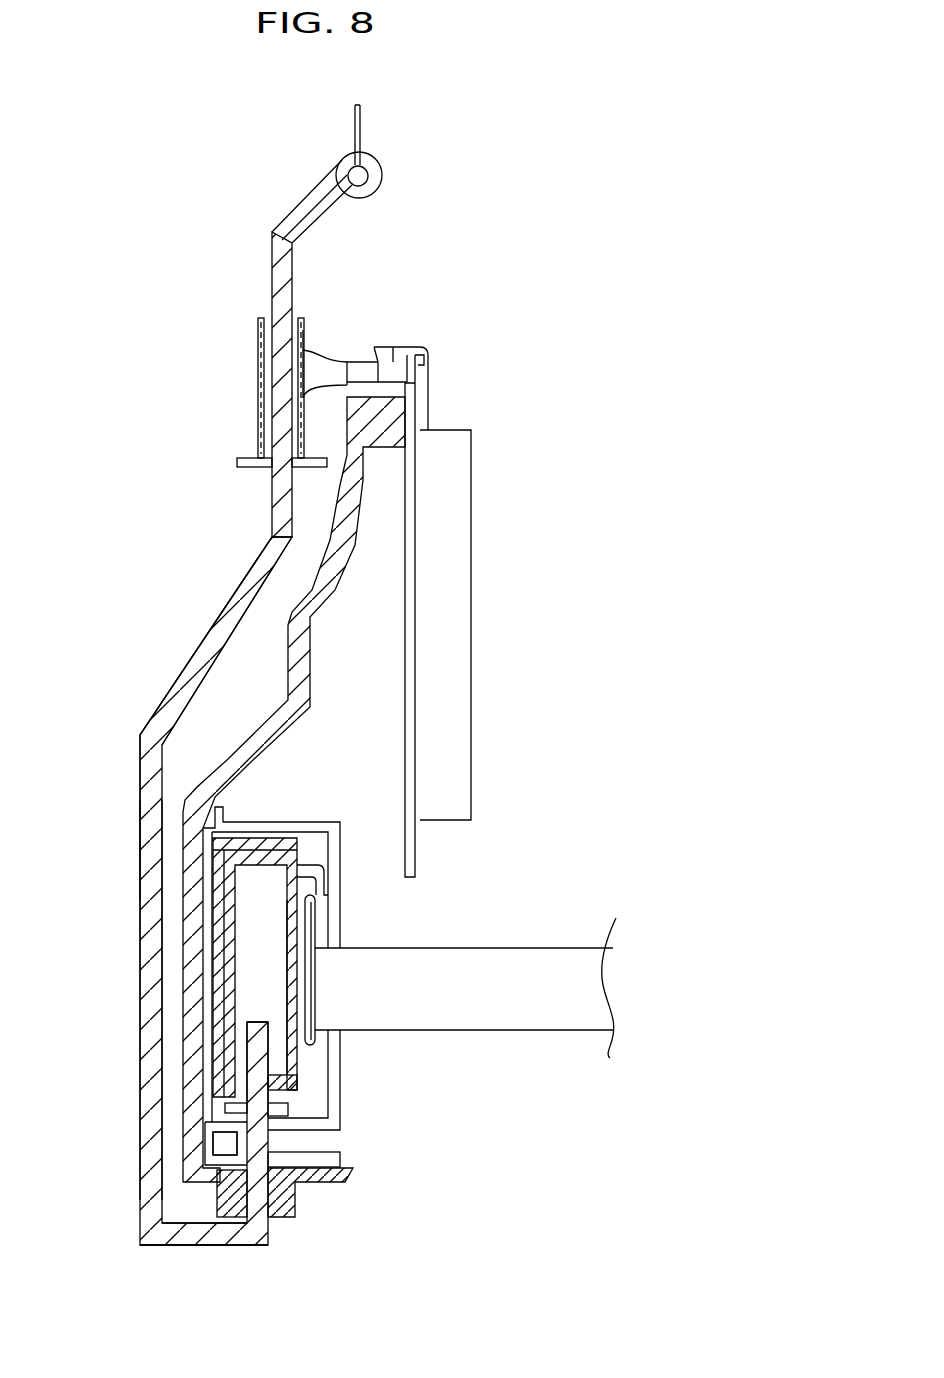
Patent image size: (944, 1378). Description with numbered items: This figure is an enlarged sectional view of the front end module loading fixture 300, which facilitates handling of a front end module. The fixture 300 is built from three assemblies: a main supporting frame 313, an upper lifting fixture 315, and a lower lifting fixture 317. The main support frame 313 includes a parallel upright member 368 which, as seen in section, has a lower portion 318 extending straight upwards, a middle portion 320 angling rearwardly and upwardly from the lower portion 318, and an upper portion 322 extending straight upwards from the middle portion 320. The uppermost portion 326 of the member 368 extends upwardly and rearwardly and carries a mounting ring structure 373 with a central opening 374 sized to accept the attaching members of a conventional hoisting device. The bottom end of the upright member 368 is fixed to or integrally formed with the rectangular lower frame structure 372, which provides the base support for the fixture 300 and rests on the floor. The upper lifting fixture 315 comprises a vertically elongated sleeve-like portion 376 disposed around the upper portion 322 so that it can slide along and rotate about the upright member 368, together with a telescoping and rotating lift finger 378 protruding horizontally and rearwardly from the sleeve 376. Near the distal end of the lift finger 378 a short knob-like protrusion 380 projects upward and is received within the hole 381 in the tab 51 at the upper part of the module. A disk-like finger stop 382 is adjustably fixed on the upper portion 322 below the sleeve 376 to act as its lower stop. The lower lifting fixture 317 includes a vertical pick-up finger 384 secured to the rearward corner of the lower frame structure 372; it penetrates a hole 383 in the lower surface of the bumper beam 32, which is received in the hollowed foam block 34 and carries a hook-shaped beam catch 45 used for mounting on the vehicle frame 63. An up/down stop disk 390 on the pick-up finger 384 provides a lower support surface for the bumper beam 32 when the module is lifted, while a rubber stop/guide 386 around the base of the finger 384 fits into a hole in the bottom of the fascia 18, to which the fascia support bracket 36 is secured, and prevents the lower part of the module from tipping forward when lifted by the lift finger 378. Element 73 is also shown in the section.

The front end module loading fixture 300 is at (160, 316).
The main supporting frame 313 is at (136, 762).
The upper lifting fixture 315 is at (328, 328).
The lower lifting fixture 317 is at (303, 1230).
The lower portion 318 is at (148, 983).
The middle portion 320 is at (175, 693).
The upper portion 322 is at (272, 305).
The uppermost portion 326 is at (310, 208).
The parallel upright member 368 is at (238, 610).
The lower frame structure 372 is at (173, 1237).
The mounting ring structure 373 is at (340, 168).
The central opening 374 is at (369, 178).
The sleeve-like portion 376 is at (255, 391).
The lift finger 378 is at (335, 368).
The knob-like protrusion 380 is at (407, 350).
The hole 381 is at (417, 356).
The finger stop 382 is at (257, 468).
The hole 383 is at (297, 1090).
The pick-up finger 384 is at (255, 1030).
The rubber stop/guide 386 is at (290, 1197).
The up/down stop disk 390 is at (227, 1108).
The fascia 18 is at (258, 735).
The bumper beam 32 is at (292, 1048).
The foam block 34 is at (218, 873).
The fascia support bracket 36 is at (333, 1158).
The beam catch 45 is at (307, 863).
The tab 51 is at (425, 415).
The vehicle frame 63 is at (498, 1015).
The pin 73 is at (319, 977).